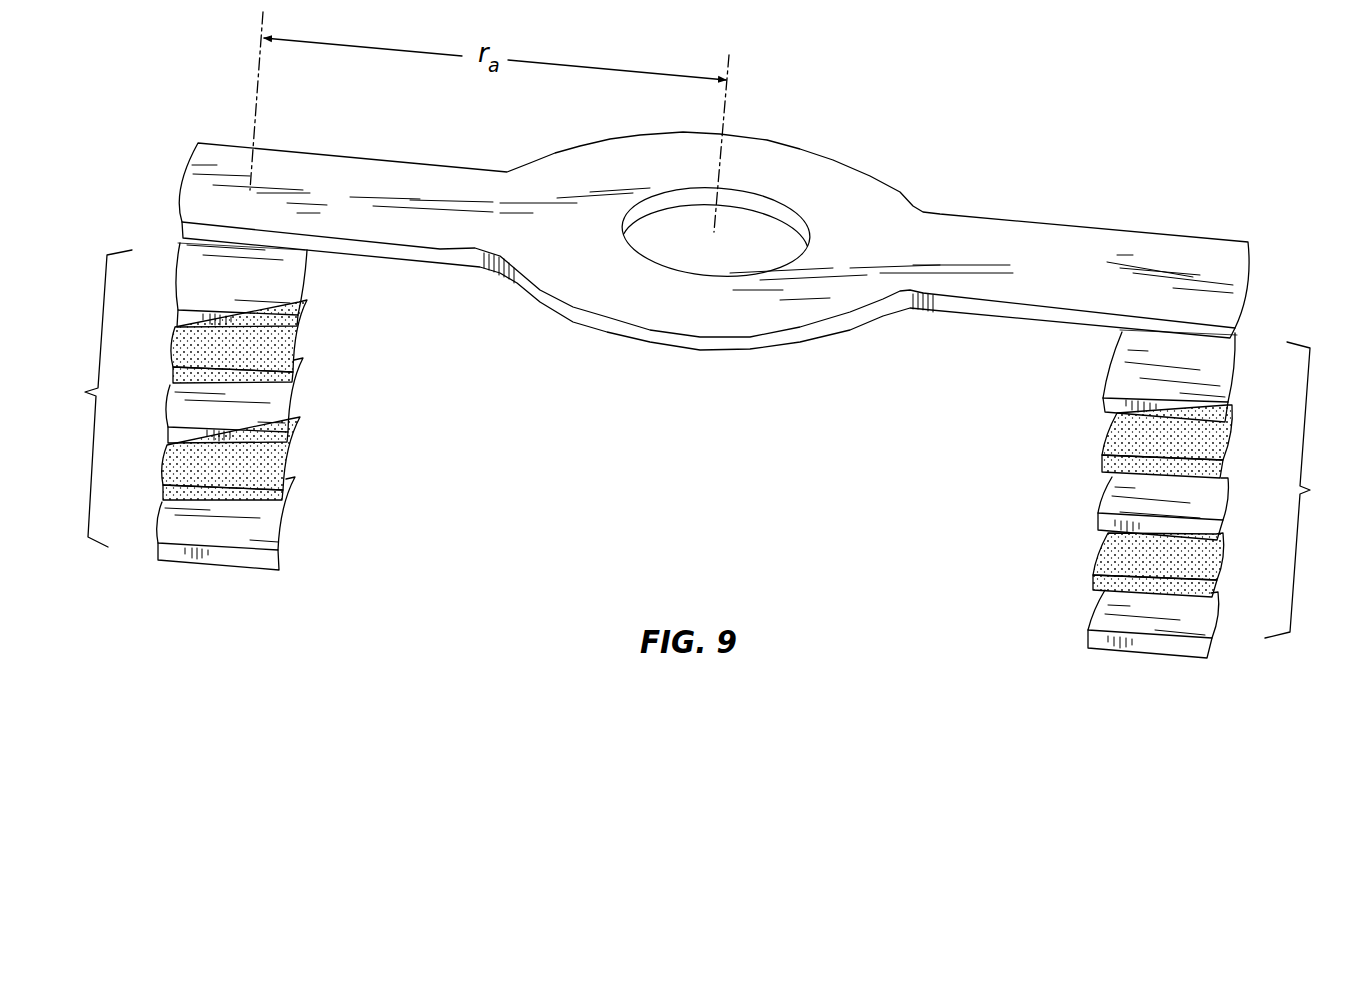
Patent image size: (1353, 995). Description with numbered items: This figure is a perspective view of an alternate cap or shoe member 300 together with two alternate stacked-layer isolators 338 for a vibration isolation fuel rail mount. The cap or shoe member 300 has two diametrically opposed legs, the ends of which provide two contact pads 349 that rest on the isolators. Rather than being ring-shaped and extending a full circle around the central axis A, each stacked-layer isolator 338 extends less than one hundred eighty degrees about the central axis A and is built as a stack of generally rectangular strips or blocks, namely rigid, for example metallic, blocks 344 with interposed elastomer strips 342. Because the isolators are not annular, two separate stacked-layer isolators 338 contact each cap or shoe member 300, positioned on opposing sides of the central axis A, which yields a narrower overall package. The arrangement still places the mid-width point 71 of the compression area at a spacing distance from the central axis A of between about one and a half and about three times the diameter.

The cap or shoe member 300 is at (883, 204).
The stacked-layer isolator 338 is at (697, 450).
The elastomer strip 342 is at (203, 358).
The rigid block 344 is at (208, 302).
The contact pad 349 is at (216, 244).
The mid-width point of the compression area 71 is at (258, 63).
The central axis A is at (730, 108).